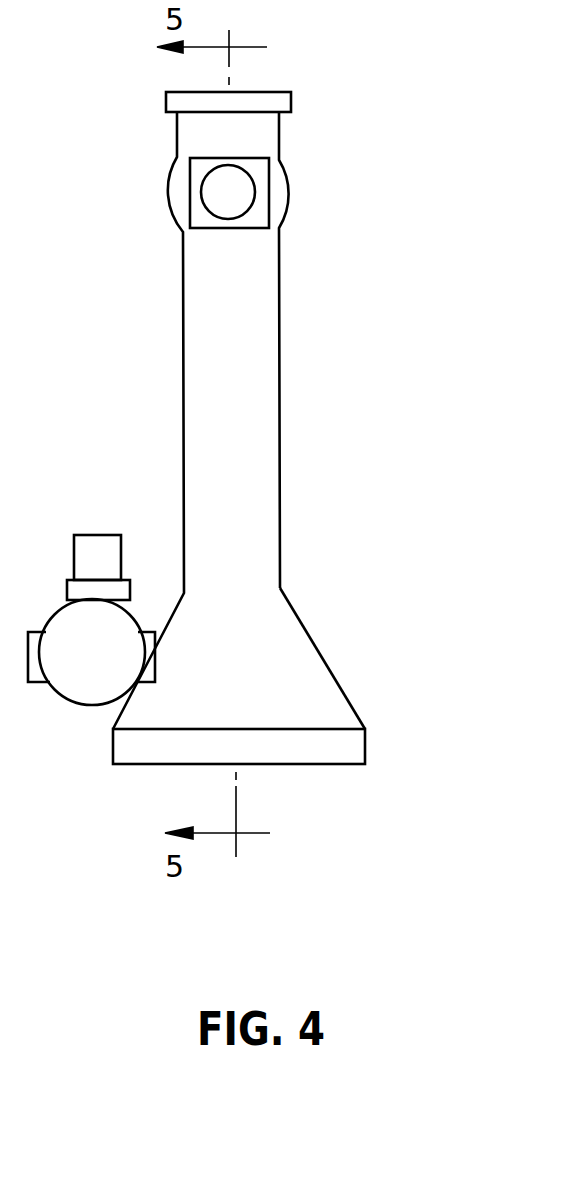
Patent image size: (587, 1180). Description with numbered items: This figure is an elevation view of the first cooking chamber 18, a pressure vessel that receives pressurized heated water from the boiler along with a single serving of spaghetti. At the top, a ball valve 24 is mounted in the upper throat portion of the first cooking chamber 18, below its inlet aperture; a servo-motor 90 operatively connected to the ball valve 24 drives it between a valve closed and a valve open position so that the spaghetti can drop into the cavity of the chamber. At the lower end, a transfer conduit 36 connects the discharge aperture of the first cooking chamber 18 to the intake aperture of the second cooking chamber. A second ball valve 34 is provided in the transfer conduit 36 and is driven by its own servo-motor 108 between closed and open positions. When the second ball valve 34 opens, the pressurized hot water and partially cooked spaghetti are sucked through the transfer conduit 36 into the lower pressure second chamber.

The first cooking chamber 18 is at (280, 367).
The ball valve 24 is at (269, 174).
The servo-motor 90 is at (243, 194).
The second ball valve 34 is at (132, 588).
The transfer conduit 36 is at (43, 682).
The servo-motor 108 is at (97, 535).